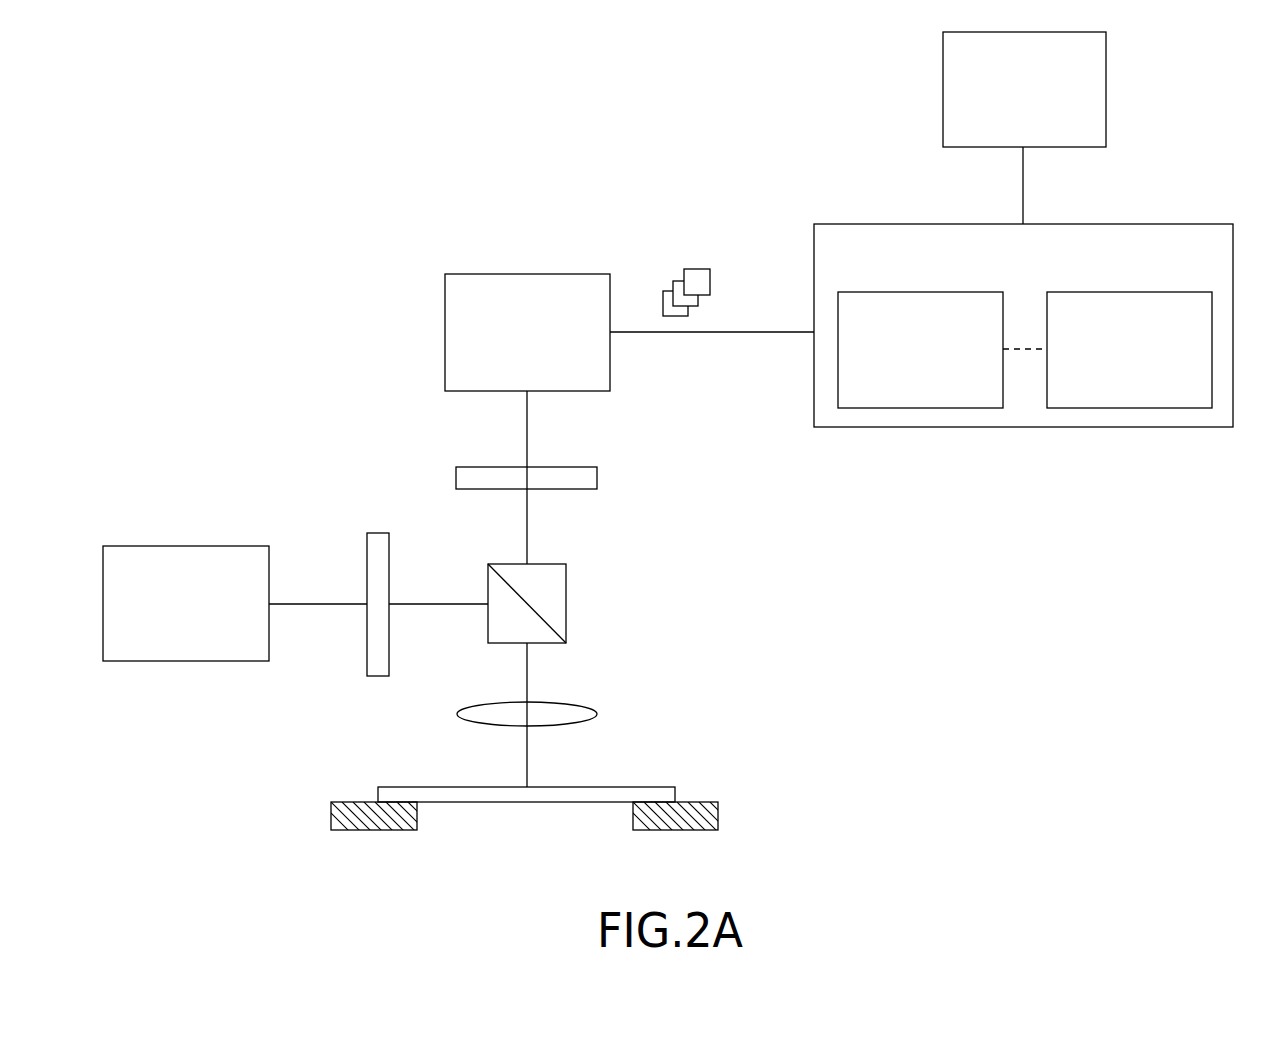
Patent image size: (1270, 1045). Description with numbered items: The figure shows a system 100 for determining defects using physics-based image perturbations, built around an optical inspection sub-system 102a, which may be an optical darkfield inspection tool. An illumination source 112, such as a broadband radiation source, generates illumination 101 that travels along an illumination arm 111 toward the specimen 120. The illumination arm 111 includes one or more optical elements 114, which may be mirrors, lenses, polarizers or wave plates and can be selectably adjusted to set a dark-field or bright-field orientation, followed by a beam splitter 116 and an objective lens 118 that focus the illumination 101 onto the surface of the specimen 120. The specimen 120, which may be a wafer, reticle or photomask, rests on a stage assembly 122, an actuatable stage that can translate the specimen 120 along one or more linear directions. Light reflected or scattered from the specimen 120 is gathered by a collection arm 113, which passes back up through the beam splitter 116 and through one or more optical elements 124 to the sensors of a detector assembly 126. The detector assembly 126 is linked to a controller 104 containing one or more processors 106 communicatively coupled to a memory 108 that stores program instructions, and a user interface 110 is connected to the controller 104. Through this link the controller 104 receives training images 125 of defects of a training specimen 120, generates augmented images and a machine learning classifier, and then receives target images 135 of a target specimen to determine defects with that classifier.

The system 100 is at (255, 158).
The illumination 101 is at (322, 607).
The optical inspection sub-system 102a is at (200, 334).
The controller 104 is at (1023, 325).
The processors 106 is at (920, 350).
The memory 108 is at (1129, 350).
The user interface 110 is at (1024, 89).
The illumination arm 111 is at (316, 499).
The illumination source 112 is at (186, 603).
The collection arm 113 is at (688, 632).
The optical elements 114 is at (378, 676).
The beam splitter 116 is at (566, 602).
The objective lens 118 is at (578, 706).
The specimen 120 is at (638, 787).
The stage assembly 122 is at (718, 815).
The optical elements 124 is at (598, 472).
The training images 125 is at (650, 280).
The detector assembly 126 is at (527, 332).
The target images 135 is at (737, 281).